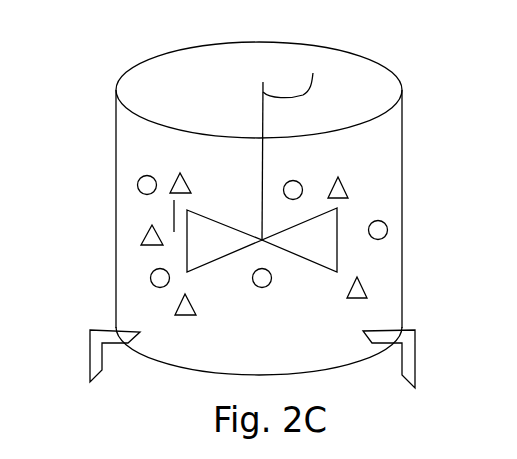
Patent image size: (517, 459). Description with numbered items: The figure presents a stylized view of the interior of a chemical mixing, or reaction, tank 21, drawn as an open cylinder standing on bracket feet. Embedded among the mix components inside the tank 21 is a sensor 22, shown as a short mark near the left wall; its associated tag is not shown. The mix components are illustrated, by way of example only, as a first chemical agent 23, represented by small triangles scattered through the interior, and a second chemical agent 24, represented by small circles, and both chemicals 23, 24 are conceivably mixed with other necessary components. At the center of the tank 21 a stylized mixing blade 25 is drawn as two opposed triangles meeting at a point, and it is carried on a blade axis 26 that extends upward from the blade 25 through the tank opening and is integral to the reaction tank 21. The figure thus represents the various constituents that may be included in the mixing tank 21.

The chemical mixing tank 21 is at (99, 71).
The sensor 22 is at (171, 217).
The first chemical agent 23 is at (345, 185).
The second chemical agent 24 is at (150, 278).
The mixing blade 25 is at (298, 248).
The blade axis 26 is at (313, 73).